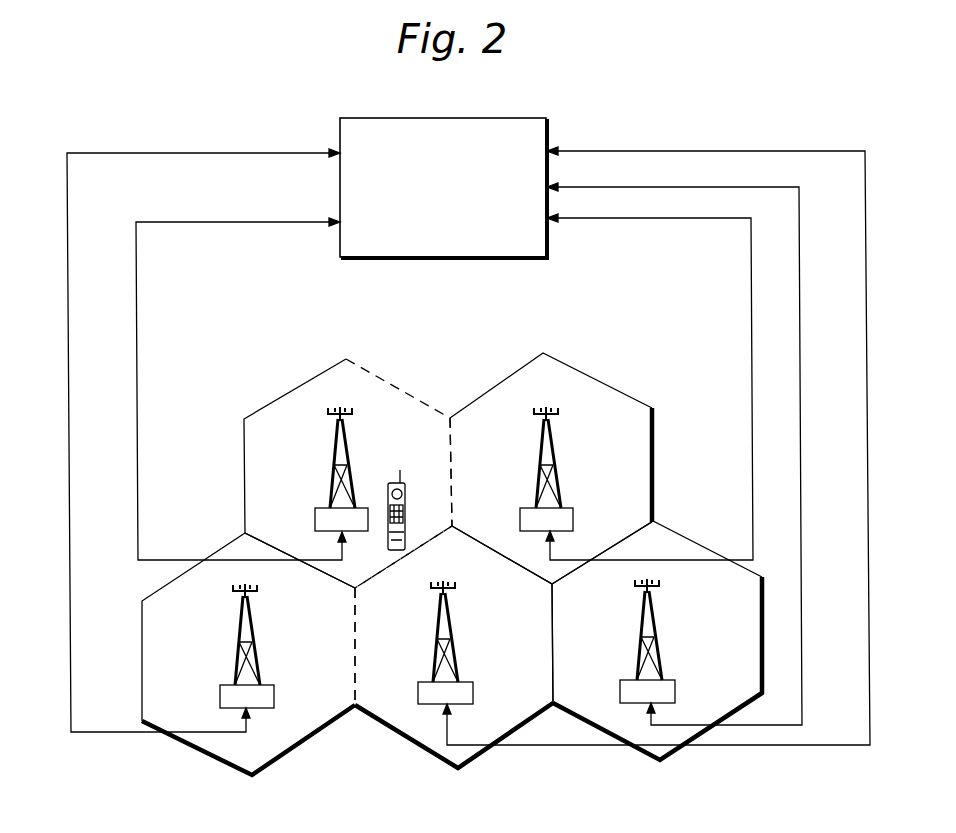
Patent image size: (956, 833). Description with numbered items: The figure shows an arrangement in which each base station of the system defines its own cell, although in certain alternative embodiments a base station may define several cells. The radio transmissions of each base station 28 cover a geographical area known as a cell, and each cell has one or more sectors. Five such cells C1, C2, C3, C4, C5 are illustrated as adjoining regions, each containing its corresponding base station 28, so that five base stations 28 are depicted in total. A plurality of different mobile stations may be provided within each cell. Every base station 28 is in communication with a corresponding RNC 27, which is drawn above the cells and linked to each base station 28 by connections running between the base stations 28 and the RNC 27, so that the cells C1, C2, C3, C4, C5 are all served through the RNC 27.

The radio network controller (RNC) 27 is at (549, 132).
The base station 28 is at (352, 470).
The cell C1 is at (348, 473).
The cell C2 is at (551, 468).
The cell C3 is at (248, 654).
The cell C4 is at (454, 647).
The cell C5 is at (657, 640).